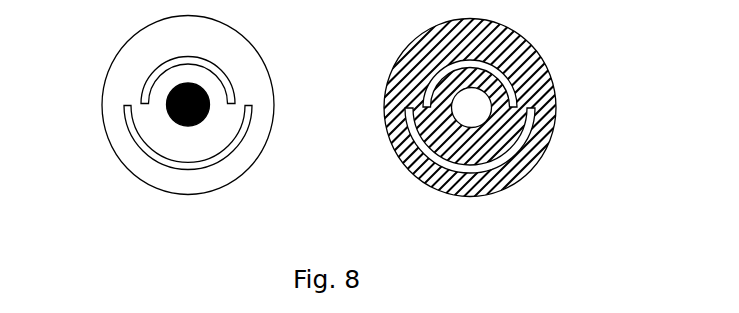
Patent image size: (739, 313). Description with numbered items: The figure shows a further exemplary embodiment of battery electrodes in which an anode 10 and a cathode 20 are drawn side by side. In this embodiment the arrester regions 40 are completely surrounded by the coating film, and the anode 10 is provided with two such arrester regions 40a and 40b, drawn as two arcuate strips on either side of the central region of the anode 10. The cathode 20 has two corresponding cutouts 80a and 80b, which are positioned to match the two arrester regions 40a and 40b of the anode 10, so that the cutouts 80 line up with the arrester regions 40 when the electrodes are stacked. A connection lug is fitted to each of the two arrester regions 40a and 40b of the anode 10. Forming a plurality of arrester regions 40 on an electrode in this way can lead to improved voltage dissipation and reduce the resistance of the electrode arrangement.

The anode 10 is at (101, 85).
The cathode 20 is at (553, 74).
The arrester regions 40 is at (536, 131).
The arrester region 40a is at (140, 152).
The arrester region 40b is at (161, 63).
The cutouts 80 is at (195, 126).
The cutout 80a is at (535, 165).
The cutout 80b is at (492, 64).